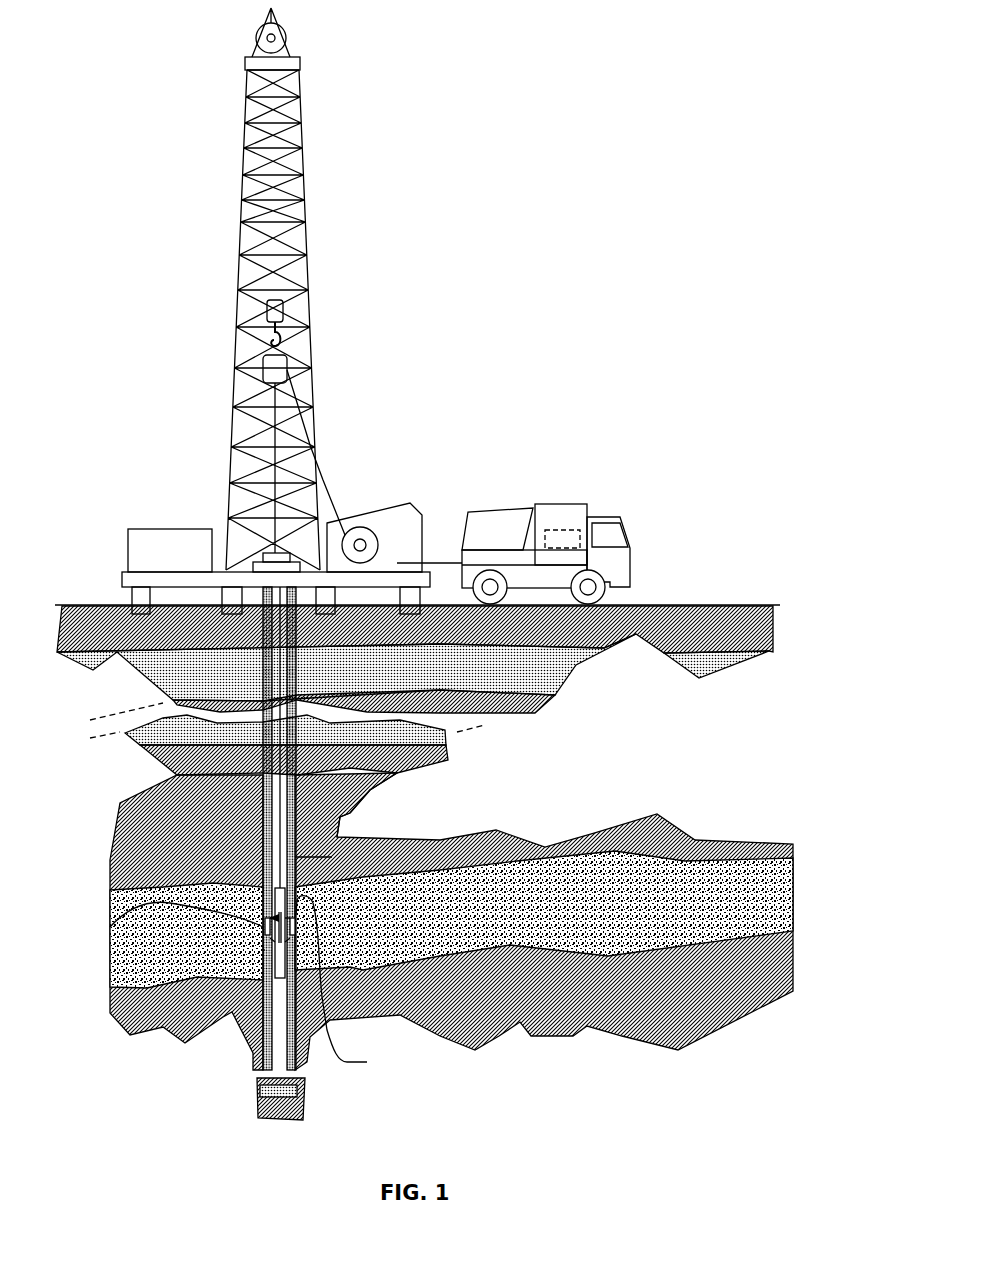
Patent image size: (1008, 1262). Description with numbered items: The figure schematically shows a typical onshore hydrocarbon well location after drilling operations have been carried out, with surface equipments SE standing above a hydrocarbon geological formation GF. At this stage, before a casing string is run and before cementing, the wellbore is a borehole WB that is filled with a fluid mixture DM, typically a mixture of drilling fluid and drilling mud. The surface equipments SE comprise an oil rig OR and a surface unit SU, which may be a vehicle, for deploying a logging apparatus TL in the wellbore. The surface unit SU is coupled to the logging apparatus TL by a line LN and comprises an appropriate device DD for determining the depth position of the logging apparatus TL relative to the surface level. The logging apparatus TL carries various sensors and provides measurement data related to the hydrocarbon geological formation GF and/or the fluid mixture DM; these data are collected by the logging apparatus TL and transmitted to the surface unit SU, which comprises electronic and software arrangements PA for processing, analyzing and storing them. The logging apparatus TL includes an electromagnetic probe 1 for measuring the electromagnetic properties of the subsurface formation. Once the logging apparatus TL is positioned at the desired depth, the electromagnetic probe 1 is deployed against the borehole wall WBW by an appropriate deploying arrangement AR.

The surface equipments SE is at (474, 224).
The oil rig OR is at (243, 222).
The device for determining the depth position DD is at (360, 539).
The surface unit SU is at (560, 503).
The electronic and software arrangements PA is at (573, 537).
The hydrocarbon geological formation GF is at (415, 838).
The line LN is at (355, 764).
The borehole wall WBW is at (353, 812).
The electromagnetic probe 1 is at (265, 922).
The logging apparatus TL is at (258, 951).
The fluid mixture DM is at (270, 1013).
The deploying arrangement AR is at (346, 984).
The borehole WB is at (282, 1060).